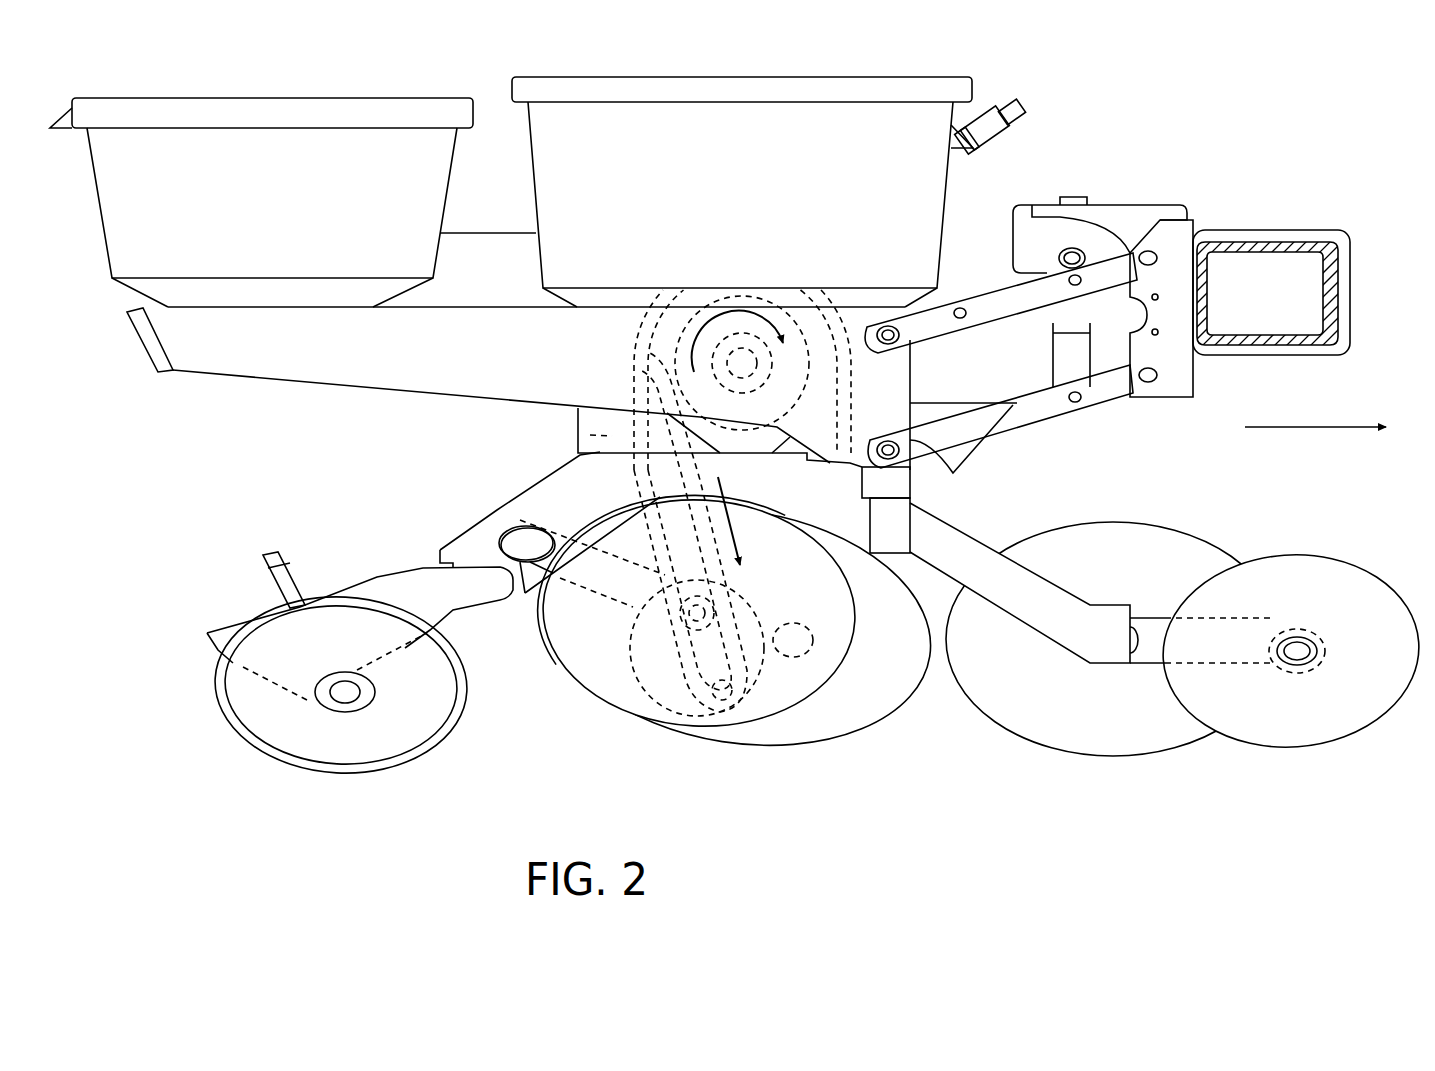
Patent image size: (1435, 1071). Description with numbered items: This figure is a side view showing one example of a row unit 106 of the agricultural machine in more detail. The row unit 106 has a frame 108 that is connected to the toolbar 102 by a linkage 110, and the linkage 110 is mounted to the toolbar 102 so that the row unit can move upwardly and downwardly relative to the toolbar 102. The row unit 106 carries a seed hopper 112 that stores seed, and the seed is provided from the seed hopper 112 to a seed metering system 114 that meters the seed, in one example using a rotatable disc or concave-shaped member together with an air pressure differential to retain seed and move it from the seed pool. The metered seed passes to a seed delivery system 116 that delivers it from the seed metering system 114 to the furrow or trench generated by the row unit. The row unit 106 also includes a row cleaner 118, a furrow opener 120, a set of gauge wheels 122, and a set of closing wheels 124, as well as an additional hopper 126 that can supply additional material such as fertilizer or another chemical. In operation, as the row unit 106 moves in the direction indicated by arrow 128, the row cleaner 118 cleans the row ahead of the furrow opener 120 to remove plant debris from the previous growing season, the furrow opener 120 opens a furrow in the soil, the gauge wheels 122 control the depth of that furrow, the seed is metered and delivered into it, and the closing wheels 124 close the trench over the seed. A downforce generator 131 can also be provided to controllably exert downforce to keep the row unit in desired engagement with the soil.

The toolbar 102 is at (1337, 260).
The row unit 106 is at (1066, 131).
The frame 108 is at (483, 503).
The linkage 110 is at (958, 235).
The seed hopper 112 is at (722, 159).
The seed metering system 114 is at (790, 313).
The seed delivery system 116 is at (580, 442).
The row cleaner 118 is at (1108, 501).
The furrow opener 120 is at (867, 700).
The gauge wheels 122 is at (610, 687).
The closing wheels 124 is at (260, 743).
The additional hopper 126 is at (237, 204).
The arrow 128 is at (1297, 428).
The downforce generator 131 is at (1118, 171).